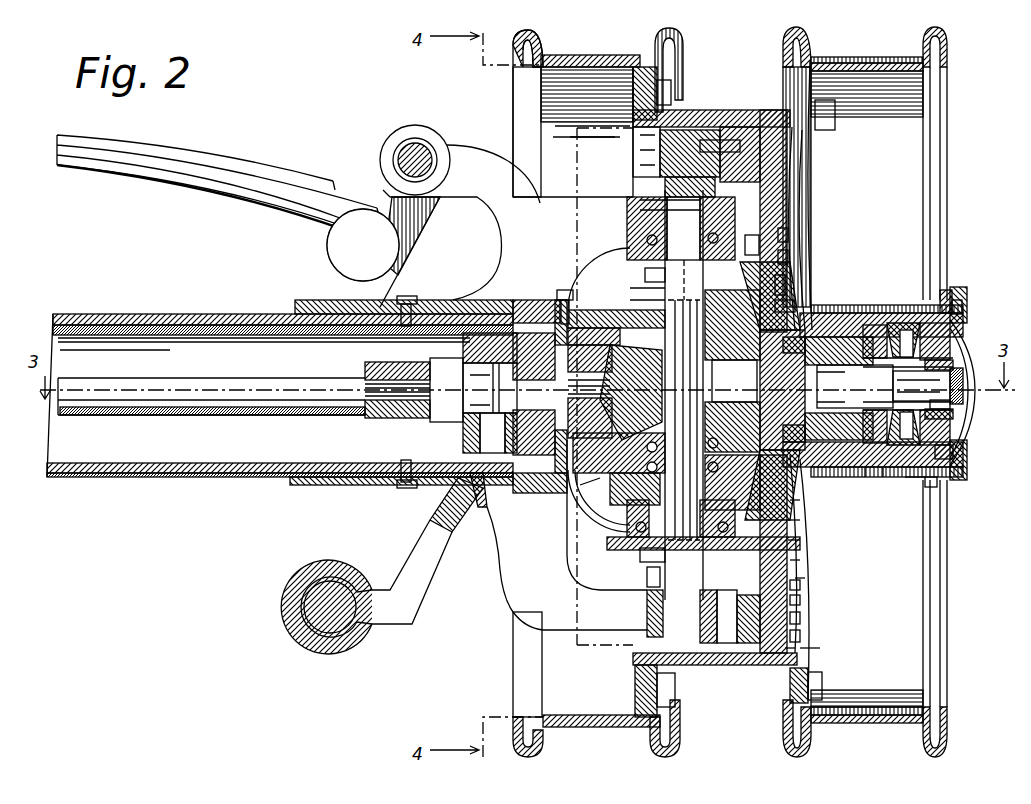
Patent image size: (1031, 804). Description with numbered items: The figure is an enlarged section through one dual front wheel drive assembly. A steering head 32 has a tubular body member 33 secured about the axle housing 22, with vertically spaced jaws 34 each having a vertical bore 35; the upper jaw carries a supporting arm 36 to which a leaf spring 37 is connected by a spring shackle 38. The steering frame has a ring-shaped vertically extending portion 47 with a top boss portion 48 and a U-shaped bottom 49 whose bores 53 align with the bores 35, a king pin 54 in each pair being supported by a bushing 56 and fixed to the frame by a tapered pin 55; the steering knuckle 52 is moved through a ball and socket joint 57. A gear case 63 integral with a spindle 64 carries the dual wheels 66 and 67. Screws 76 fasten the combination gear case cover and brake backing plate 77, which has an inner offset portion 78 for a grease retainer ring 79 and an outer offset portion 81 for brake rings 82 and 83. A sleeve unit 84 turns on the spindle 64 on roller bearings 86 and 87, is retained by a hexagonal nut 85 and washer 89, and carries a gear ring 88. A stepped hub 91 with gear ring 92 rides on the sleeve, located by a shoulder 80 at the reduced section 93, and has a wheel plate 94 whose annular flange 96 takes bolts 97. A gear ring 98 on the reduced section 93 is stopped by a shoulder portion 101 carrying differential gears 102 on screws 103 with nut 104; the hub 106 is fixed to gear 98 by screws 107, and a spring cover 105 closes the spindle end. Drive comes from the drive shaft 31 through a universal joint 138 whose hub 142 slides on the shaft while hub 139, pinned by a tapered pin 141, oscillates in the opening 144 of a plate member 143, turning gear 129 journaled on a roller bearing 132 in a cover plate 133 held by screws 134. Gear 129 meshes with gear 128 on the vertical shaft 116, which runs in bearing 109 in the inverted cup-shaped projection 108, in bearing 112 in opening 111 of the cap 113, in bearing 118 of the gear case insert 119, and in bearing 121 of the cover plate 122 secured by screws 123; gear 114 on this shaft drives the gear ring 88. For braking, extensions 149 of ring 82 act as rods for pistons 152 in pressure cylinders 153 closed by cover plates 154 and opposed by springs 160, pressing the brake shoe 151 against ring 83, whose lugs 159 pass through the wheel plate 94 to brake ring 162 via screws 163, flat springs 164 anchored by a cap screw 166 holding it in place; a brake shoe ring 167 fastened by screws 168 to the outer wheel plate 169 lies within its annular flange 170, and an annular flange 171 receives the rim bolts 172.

The axle housing 22 is at (228, 318).
The drive shaft 31 is at (222, 384).
The steering head 32 is at (485, 600).
The tubular body member 33 is at (305, 306).
The jaws 34 is at (602, 204).
The vertical bore 35 is at (668, 204).
The supporting arm 36 is at (470, 198).
The leaf spring 37 is at (258, 168).
The spring shackle 38 is at (366, 174).
The vertically extending portion 47 is at (650, 292).
The top boss portion 48 is at (645, 277).
The U-shaped bottom 49 is at (642, 556).
The steering knuckle 52 is at (405, 622).
The bores 53 is at (646, 240).
The king pin 54 is at (640, 224).
The tapered pin 55 is at (648, 596).
The bushing 56 is at (640, 207).
The ball and socket joint 57 is at (345, 565).
The gear case 63 is at (786, 236).
The spindle 64 is at (883, 386).
The outer wheel 66 is at (866, 60).
The inner wheel 67 is at (596, 60).
The screws 76 is at (750, 245).
The combination gear case cover and brake backing plate 77 is at (772, 215).
The offset portion 78 is at (790, 285).
The grease retainer ring 79 is at (800, 305).
The shoulder 80 is at (838, 322).
The offset portion 81 is at (735, 680).
The brake ring 82 is at (742, 666).
The brake ring 83 is at (766, 666).
The sleeve unit 84 is at (815, 325).
The hexagonal nut 85 is at (952, 405).
The roller bearing 86 is at (792, 420).
The roller bearing 87 is at (958, 418).
The gear ring 88 is at (788, 258).
The washer 89 is at (955, 362).
The stepped hub 91 is at (864, 478).
The gear ring 92 is at (884, 478).
The reduced section 93 is at (957, 452).
The wheel plate 94 is at (782, 255).
The annular flange 96 is at (645, 662).
The bolts 97 is at (672, 75).
The gear ring 98 is at (950, 296).
The shoulder portion 101 is at (956, 312).
The differential gears 102 is at (932, 480).
The screws 103 is at (918, 482).
The nut 104 is at (936, 386).
The spring cover 105 is at (972, 345).
The hub 106 is at (882, 305).
The screws 107 is at (975, 303).
The inverted cup-shaped projection 108 is at (648, 314).
The bearing 109 is at (623, 304).
The opening 111 is at (650, 480).
The bearing 112 is at (705, 478).
The cap 113 is at (582, 486).
The gear 114 is at (598, 505).
The vertical shaft 116 is at (681, 488).
The bearing 118 is at (732, 420).
The gear case insert 119 is at (608, 462).
The bearing 121 is at (795, 526).
The cover plate 122 is at (792, 545).
The screws 123 is at (796, 565).
The gear 128 is at (732, 346).
The gear 129 is at (615, 384).
The roller bearing 132 is at (562, 448).
The cover plate 133 is at (542, 356).
The screws 134 is at (500, 302).
The universal joint 138 is at (490, 388).
The hub 139 is at (490, 394).
The tapered pin 141 is at (490, 356).
The hub 142 is at (398, 372).
The plate member 143 is at (565, 300).
The opening 144 is at (490, 433).
The extensions 149 is at (714, 138).
The brake shoe 151 is at (748, 128).
The piston 152 is at (697, 176).
The pressure cylinder 153 is at (690, 128).
The cover plate 154 is at (678, 158).
The lugs 159 is at (802, 640).
The spring 160 is at (738, 120).
The brake ring 162 is at (802, 588).
The screws 163 is at (802, 602).
The flat springs 164 is at (800, 578).
The cap screw 166 is at (798, 505).
The brake shoe ring 167 is at (792, 650).
The screws 168 is at (802, 620).
The wheel plate 169 is at (822, 650).
The annular flange 170 is at (790, 660).
The annular flange 171 is at (795, 705).
The bolts 172 is at (824, 686).